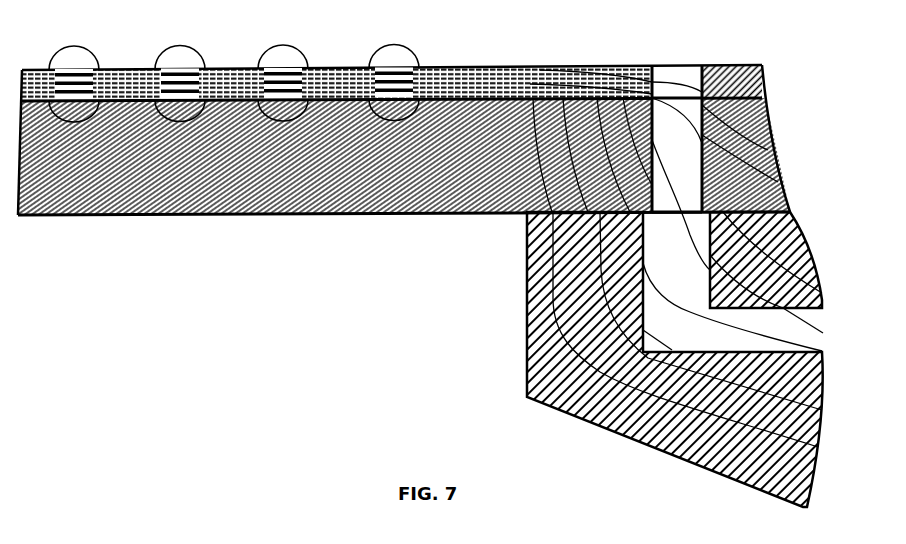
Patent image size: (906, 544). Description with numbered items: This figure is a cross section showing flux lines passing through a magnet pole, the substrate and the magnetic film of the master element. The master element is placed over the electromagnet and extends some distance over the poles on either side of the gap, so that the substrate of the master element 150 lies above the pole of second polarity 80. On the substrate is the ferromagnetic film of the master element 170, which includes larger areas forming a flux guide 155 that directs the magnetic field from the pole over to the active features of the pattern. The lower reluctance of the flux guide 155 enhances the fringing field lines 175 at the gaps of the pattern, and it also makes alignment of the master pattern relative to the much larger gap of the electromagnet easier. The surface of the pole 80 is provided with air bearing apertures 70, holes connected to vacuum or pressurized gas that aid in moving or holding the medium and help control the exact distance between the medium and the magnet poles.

The air bearing apertures 70 is at (683, 62).
The pole of second polarity, S 80 is at (522, 353).
The substrate of master element 150 is at (240, 217).
The flux guide of pattern film 155 is at (565, 62).
The ferromagnetic film of master element 170 is at (247, 63).
The fringing field lines 175 is at (157, 53).